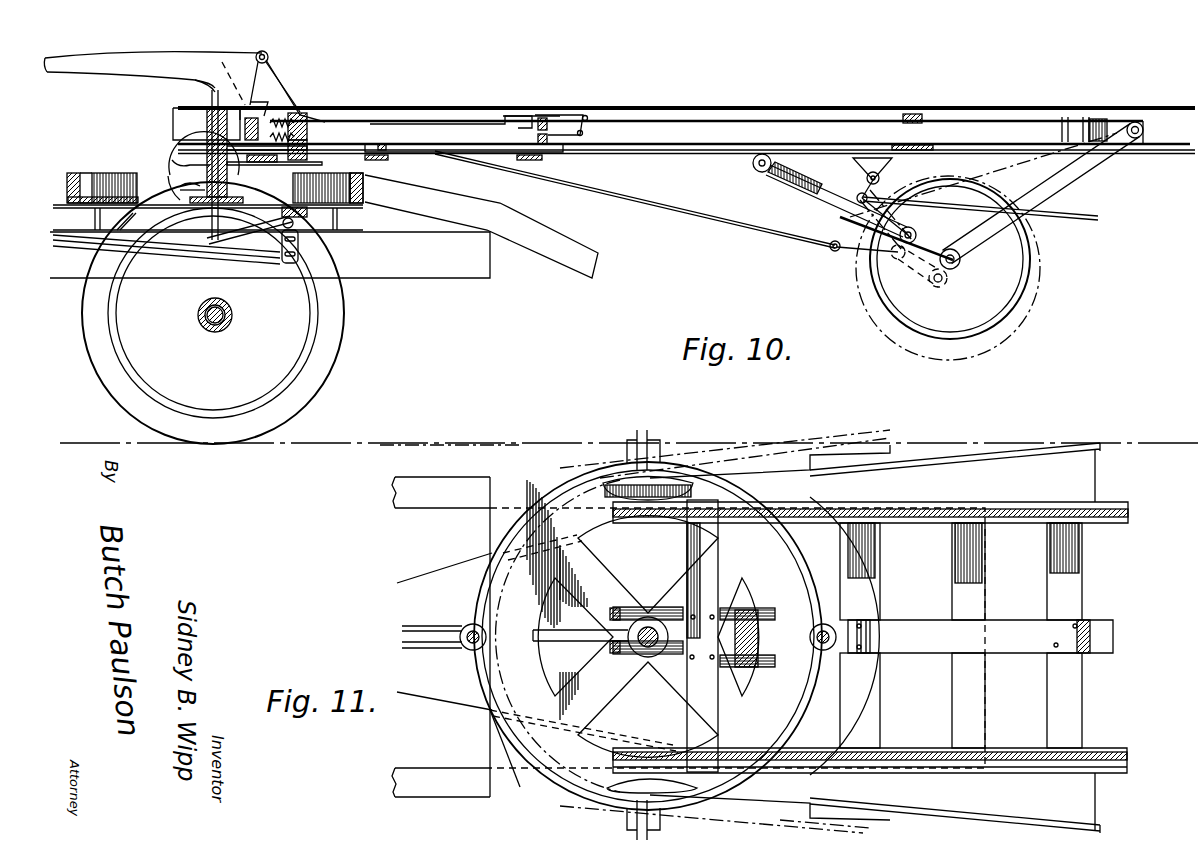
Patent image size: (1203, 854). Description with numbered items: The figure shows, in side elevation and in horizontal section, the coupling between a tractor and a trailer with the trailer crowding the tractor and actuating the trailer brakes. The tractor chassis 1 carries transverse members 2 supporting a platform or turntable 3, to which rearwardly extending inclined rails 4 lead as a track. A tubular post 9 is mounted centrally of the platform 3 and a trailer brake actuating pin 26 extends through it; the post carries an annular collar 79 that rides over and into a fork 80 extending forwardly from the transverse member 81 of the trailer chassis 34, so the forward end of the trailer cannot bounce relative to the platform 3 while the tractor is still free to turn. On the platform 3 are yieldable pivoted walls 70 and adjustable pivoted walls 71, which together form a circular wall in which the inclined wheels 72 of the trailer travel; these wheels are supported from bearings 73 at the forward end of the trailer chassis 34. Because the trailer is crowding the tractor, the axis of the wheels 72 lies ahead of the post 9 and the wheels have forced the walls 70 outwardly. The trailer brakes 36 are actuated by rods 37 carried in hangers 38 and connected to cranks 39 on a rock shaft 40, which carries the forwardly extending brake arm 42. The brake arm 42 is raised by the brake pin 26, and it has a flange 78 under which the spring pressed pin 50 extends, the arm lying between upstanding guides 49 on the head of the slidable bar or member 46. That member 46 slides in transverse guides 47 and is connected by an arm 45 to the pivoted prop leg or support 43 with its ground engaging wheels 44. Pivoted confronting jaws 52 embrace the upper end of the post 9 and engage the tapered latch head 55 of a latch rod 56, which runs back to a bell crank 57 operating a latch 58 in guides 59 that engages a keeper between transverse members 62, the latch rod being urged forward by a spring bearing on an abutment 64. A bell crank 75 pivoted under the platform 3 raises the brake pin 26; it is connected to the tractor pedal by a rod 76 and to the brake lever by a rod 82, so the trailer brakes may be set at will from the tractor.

In FIG. 10, the tractor chassis 1 is at (420, 279).
In FIG. 11, the tractor chassis 1 is at (426, 481).
In FIG. 10, the transverse members 2 is at (90, 221).
In FIG. 10, the platform or turntable 3 is at (361, 205).
In FIG. 11, the platform or turntable 3 is at (522, 788).
In FIG. 10, the inclined rails 4 is at (551, 255).
In FIG. 11, the inclined rails 4 is at (1019, 466).
In FIG. 10, the tubular post 9 is at (180, 188).
In FIG. 11, the tubular post 9 is at (648, 630).
In FIG. 10, the trailer brake actuating pin 26 is at (211, 92).
In FIG. 11, the trailer brake actuating pin 26 is at (648, 655).
In FIG. 10, the trailer chassis 34 is at (806, 107).
In FIG. 11, the trailer chassis 34 is at (891, 509).
In FIG. 10, the brakes 36 is at (385, 143).
In FIG. 11, the brakes 36 is at (878, 630).
In FIG. 10, the rods 37 is at (672, 207).
In FIG. 10, the hangers 38 is at (845, 225).
In FIG. 10, the cranks 39 is at (300, 86).
In FIG. 10, the rock shaft 40 is at (268, 55).
In FIG. 10, the brake arm 42 is at (109, 62).
In FIG. 10, the pivoted prop leg or support 43 is at (810, 190).
In FIG. 10, the ground engaging wheels 44 is at (1025, 292).
In FIG. 10, the arm 45 is at (1055, 170).
In FIG. 10, the bar or member 46 is at (718, 125).
In FIG. 10, the transverse guides or members 47 is at (912, 113).
In FIG. 11, the transverse guides or members 47 is at (759, 632).
In FIG. 10, the upstanding guides 49 is at (264, 112).
In FIG. 10, the spring pressed pin 50 is at (270, 73).
In FIG. 10, the confronting jaws 52 is at (178, 125).
In FIG. 10, the tapered latch head 55 is at (182, 115).
In FIG. 10, the latch rod 56 is at (466, 121).
In FIG. 10, the bell crank 57 is at (600, 112).
In FIG. 10, the latch 58 is at (545, 118).
In FIG. 11, the latch 58 is at (1090, 628).
In FIG. 10, the guides 59 is at (519, 115).
In FIG. 10, the transverse members 62 is at (378, 159).
In FIG. 11, the transverse members 62 is at (870, 573).
In FIG. 10, the abutment 64 is at (301, 115).
In FIG. 10, the yieldable pivoted walls 70 is at (105, 173).
In FIG. 11, the yieldable pivoted walls 70 is at (510, 726).
In FIG. 10, the adjustable pivoted walls 71 is at (305, 173).
In FIG. 11, the adjustable pivoted walls 71 is at (800, 552).
In FIG. 10, the inclined wheels 72 is at (176, 158).
In FIG. 11, the inclined wheels 72 is at (662, 480).
In FIG. 11, the bearings 73 is at (506, 548).
In FIG. 10, the bell crank 75 is at (300, 253).
In FIG. 10, the rod 76 is at (200, 80).
In FIG. 11, the rod 76 is at (450, 644).
In FIG. 10, the flange 78 is at (225, 79).
In FIG. 10, the annular collar 79 is at (175, 163).
In FIG. 11, the annular collar 79 is at (605, 634).
In FIG. 10, the fork 80 is at (176, 186).
In FIG. 11, the fork 80 is at (594, 657).
In FIG. 10, the transverse member 81 is at (262, 168).
In FIG. 11, the transverse member 81 is at (688, 557).
In FIG. 10, the rod 82 is at (191, 251).
In FIG. 11, the rod 82 is at (425, 627).